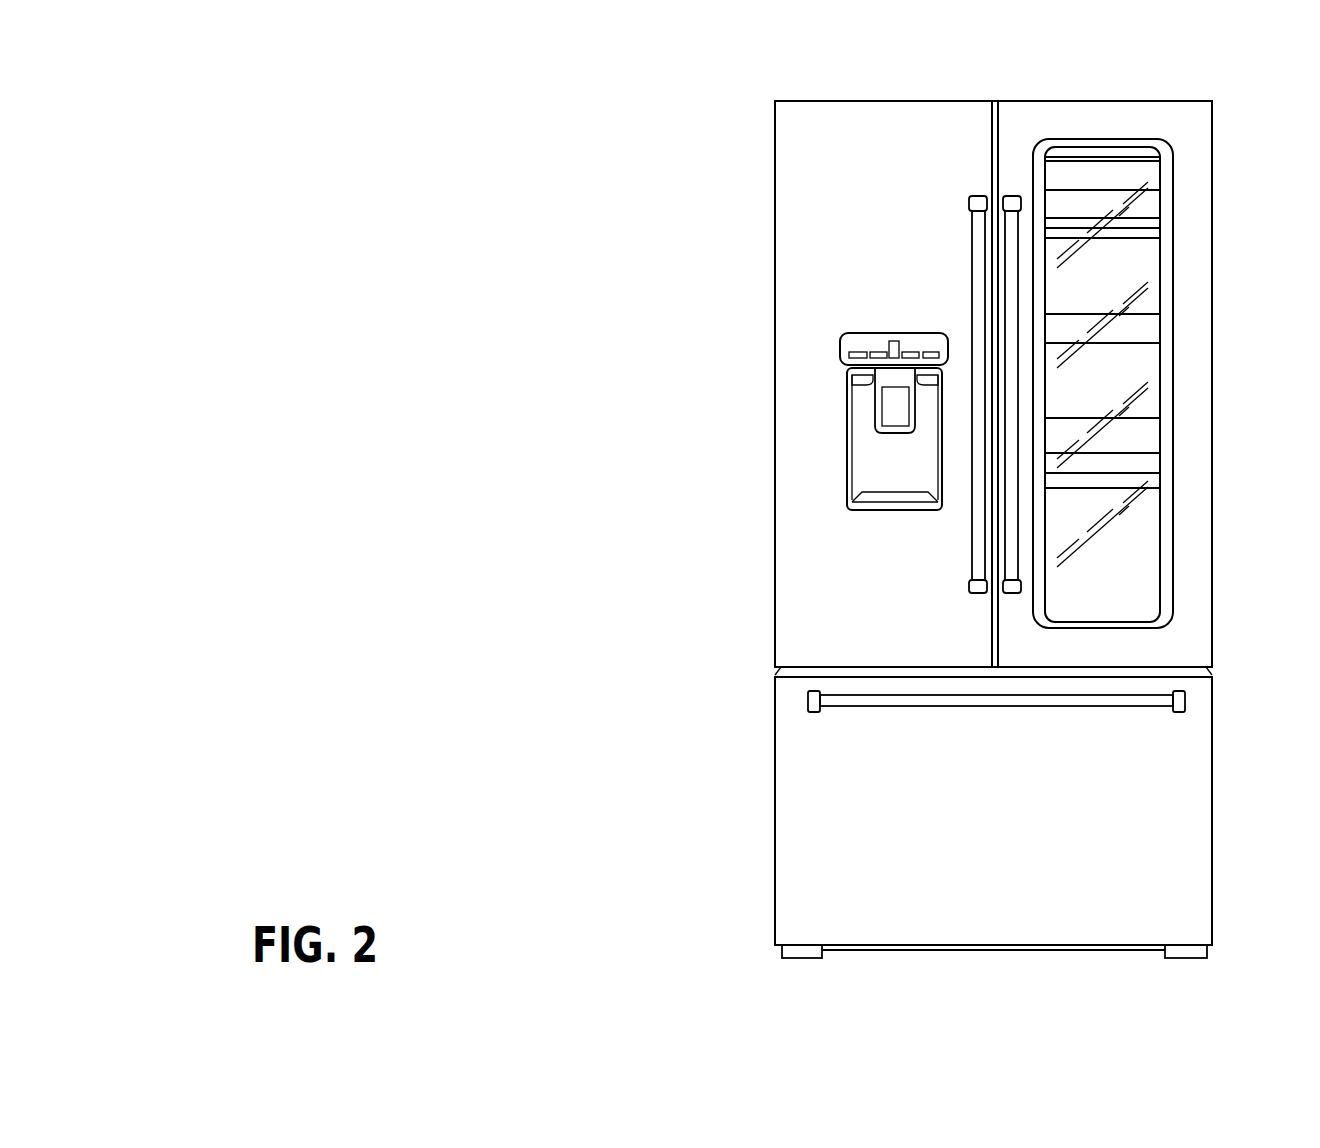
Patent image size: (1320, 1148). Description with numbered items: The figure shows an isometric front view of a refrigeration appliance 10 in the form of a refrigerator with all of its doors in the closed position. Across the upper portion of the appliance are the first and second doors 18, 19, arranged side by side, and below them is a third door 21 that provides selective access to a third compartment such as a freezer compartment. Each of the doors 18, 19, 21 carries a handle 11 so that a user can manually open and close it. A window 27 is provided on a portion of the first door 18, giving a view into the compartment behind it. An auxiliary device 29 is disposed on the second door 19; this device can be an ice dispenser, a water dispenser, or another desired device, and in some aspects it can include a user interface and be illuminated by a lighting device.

The refrigeration appliance 10 is at (640, 142).
The handle 11 is at (978, 244).
The first door 18 is at (1167, 642).
The second door 19 is at (840, 260).
The third door 21 is at (1153, 828).
The window 27 is at (1163, 413).
The auxiliary device 29 is at (895, 462).